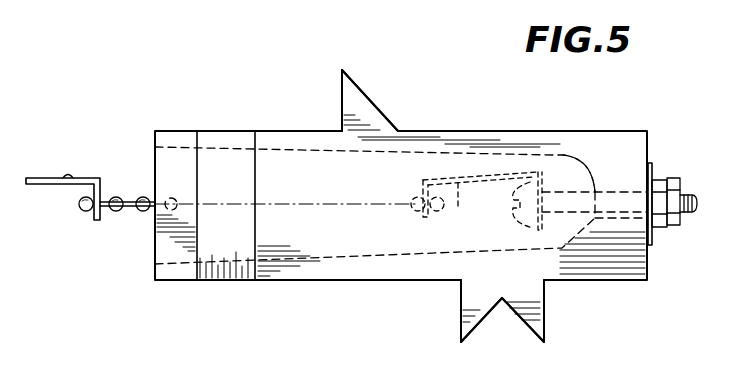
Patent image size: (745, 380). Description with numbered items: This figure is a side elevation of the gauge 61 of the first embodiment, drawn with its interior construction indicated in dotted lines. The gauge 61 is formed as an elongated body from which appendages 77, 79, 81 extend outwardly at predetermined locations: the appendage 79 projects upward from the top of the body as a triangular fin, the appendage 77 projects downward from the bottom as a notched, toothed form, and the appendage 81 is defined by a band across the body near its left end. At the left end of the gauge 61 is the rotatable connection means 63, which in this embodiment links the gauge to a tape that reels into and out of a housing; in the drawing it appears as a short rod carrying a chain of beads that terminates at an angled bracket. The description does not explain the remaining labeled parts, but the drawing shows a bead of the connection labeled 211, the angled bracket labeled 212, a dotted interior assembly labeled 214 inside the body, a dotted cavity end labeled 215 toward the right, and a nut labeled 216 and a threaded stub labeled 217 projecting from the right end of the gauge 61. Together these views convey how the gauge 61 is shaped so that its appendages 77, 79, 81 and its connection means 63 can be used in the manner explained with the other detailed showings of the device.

The gauge 61 is at (478, 130).
The rotatable connection means 63 is at (133, 195).
The appendage 77 is at (533, 302).
The appendage 79 is at (342, 101).
The appendage 81 is at (237, 217).
The ball 211 is at (113, 211).
The L-shaped bracket 212 is at (92, 175).
The internal assembly 214 is at (458, 208).
The internal cavity end 215 is at (575, 170).
The nut 216 is at (660, 180).
The threaded stub 217 is at (675, 176).